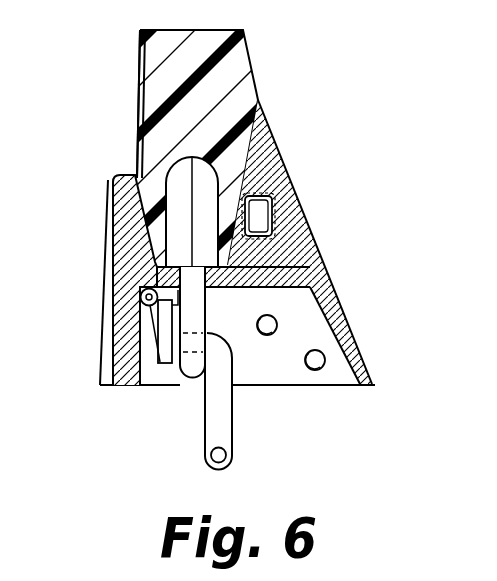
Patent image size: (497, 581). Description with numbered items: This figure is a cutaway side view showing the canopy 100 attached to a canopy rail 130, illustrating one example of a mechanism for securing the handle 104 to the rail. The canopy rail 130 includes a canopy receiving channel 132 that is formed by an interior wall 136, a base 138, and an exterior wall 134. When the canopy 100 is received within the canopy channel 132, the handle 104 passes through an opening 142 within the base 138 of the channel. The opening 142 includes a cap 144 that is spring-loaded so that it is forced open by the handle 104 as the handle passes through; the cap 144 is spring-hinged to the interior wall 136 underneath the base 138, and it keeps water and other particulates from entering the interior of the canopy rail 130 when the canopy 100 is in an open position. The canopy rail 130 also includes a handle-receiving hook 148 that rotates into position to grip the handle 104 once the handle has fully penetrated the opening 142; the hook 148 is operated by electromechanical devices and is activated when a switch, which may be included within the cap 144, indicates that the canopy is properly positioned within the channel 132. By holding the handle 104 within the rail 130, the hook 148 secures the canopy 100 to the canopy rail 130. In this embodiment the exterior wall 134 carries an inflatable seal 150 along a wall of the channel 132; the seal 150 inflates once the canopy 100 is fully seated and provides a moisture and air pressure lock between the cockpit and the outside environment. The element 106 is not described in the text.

The canopy 100 is at (246, 60).
The handle 104 is at (212, 298).
The clamp cap 106 is at (219, 176).
The canopy rail 130 is at (350, 266).
The canopy receiving channel 132 is at (138, 153).
The exterior wall 134 is at (294, 228).
The interior wall 136 is at (118, 218).
The base 138 is at (310, 285).
The opening 142 is at (140, 296).
The cap 144 is at (167, 364).
The handle-receiving hook 148 is at (232, 430).
The inflatable seal 150 is at (262, 213).